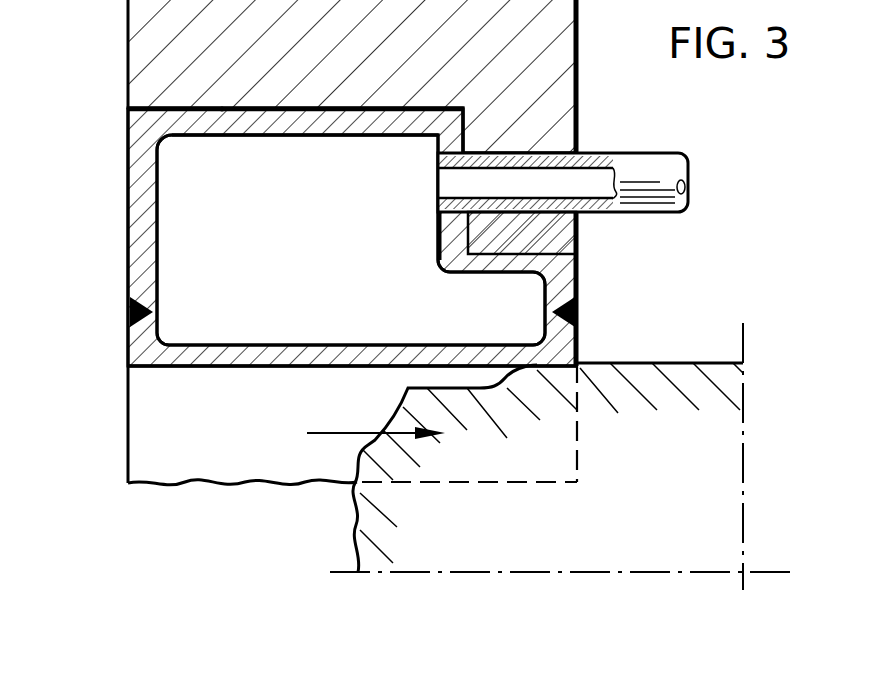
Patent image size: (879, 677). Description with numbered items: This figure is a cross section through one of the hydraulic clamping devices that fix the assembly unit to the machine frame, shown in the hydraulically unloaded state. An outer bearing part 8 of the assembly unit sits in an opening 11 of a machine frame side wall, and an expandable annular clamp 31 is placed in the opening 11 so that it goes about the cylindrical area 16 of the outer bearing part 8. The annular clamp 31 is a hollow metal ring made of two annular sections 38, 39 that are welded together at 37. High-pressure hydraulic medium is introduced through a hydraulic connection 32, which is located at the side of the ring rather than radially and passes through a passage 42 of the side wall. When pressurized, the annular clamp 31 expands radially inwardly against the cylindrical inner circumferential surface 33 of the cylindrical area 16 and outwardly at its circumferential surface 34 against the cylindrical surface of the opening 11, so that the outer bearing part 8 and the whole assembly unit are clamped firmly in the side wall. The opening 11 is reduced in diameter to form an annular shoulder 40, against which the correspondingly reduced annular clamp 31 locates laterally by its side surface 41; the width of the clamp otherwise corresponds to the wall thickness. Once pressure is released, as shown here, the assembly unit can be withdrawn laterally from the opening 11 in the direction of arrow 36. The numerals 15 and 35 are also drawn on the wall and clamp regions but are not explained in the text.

The outer bearing part 8 is at (720, 505).
The opening 11 is at (130, 430).
The housing wall 15 is at (577, 18).
The cylindrical area 16 is at (697, 363).
The annular clamp 31 is at (165, 258).
The hydraulic connection 32 is at (668, 210).
The cylindrical inner circumferential surface 33 is at (260, 367).
The circumferential surface 34 is at (224, 111).
The top wall 35 is at (127, 106).
The arrow 36 is at (345, 433).
The weld 37 is at (127, 313).
The annular section 38 is at (137, 183).
The annular section 39 is at (205, 368).
The annular shoulder 40 is at (465, 128).
The side surface 41 is at (465, 235).
The passage 42 is at (575, 228).